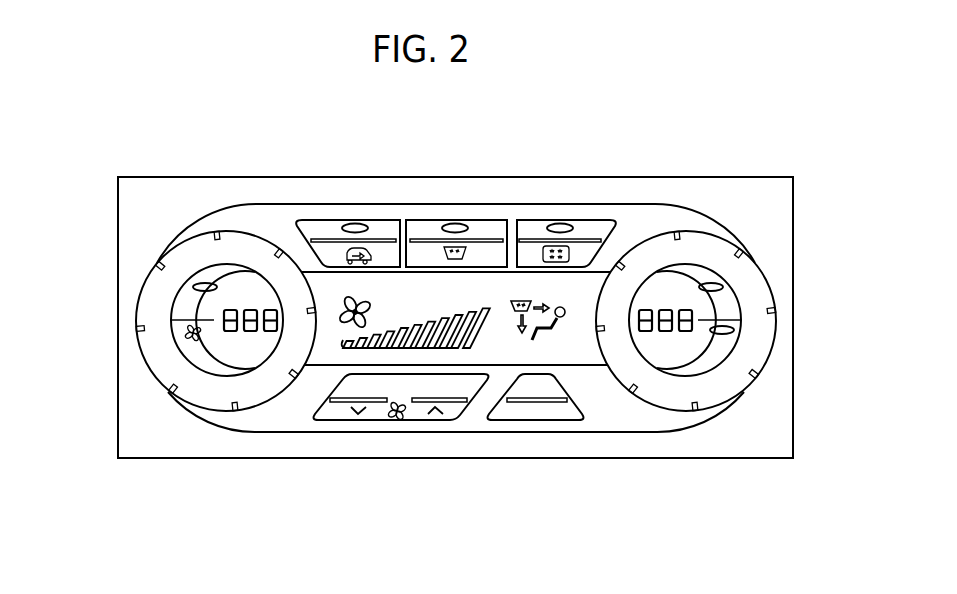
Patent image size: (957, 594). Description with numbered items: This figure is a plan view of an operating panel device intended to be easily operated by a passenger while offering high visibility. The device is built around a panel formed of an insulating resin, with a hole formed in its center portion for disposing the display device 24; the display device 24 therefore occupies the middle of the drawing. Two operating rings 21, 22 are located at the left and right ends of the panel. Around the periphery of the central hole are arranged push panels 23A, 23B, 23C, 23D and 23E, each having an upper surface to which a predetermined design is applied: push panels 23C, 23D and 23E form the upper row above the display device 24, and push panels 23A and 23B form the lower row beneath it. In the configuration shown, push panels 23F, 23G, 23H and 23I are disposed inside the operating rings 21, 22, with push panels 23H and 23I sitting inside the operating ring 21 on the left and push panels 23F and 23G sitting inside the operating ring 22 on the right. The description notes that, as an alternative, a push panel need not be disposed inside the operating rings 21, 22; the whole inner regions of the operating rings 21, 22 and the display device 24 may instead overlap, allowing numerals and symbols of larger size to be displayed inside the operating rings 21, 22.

The operating ring 21 is at (193, 244).
The operating ring 22 is at (692, 238).
The push panel 23A is at (343, 408).
The push panel 23B is at (512, 408).
The push panel 23C is at (326, 225).
The push panel 23D is at (428, 225).
The push panel 23E is at (532, 225).
The push panel 23F is at (718, 276).
The push panel 23G is at (727, 348).
The push panel 23H is at (190, 288).
The push panel 23I is at (192, 350).
The display device 24 is at (580, 348).